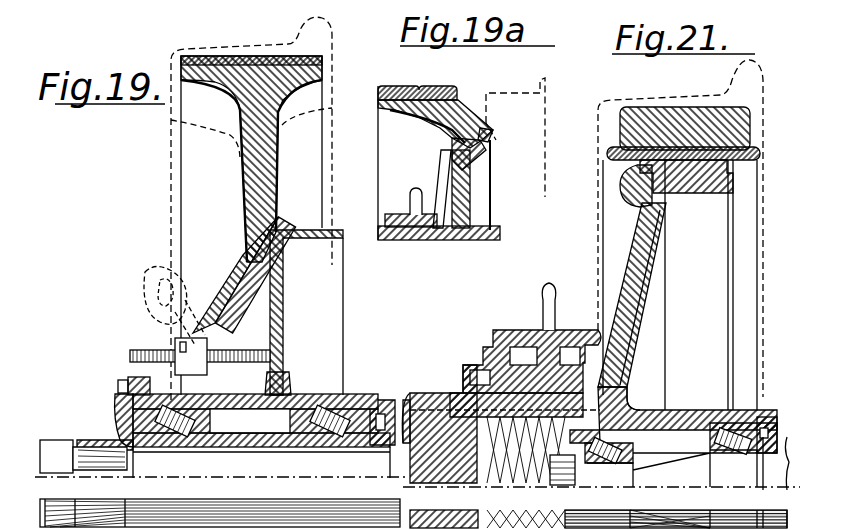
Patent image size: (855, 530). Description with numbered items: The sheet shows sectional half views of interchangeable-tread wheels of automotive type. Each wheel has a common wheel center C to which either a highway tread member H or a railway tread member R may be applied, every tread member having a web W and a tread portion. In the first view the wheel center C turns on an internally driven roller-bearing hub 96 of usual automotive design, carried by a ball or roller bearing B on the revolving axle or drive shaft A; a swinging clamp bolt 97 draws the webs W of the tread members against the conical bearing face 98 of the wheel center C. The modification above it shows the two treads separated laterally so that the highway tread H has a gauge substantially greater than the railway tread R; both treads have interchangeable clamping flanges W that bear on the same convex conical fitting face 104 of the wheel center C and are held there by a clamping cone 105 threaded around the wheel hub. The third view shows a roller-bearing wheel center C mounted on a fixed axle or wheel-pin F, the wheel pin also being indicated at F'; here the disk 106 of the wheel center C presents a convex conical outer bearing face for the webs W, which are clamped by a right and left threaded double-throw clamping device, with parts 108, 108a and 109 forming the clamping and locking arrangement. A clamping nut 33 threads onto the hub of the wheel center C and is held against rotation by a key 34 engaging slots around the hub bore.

In FIG. 19, the highway tread member H is at (300, 77).
In FIG. 19A, the highway tread member H is at (460, 82).
In FIG. 21, the highway tread member H is at (657, 118).
In FIG. 19, the railway tread member R is at (170, 118).
In FIG. 19A, the railway tread member R is at (508, 100).
In FIG. 21, the railway tread member R is at (700, 96).
In FIG. 19, the web W is at (233, 257).
In FIG. 19A, the web W is at (453, 126).
In FIG. 21, the web W is at (640, 222).
In FIG. 19, the wheel center C is at (277, 295).
In FIG. 19A, the wheel center C is at (470, 195).
In FIG. 21, the wheel center C is at (635, 346).
In FIG. 19, the conical bearing face 98 is at (277, 220).
In FIG. 19, the swinging clamp bolt 97 is at (143, 355).
In FIG. 19, the roller-bearing hub 96 is at (255, 396).
In FIG. 19, the ball or roller bearing B is at (340, 393).
In FIG. 19, the revolving axle or drive shaft A is at (237, 500).
In FIG. 19A, the clamping cone 105 is at (492, 135).
In FIG. 19A, the conical fitting face 104 is at (475, 160).
In FIG. 21, the disk 106 is at (648, 263).
In FIG. 21, the fillet portion 109 is at (640, 324).
In FIG. 21, the gear 108 is at (505, 331).
In FIG. 21, the lever 108a is at (560, 278).
In FIG. 21, the clamping nut 33 is at (450, 393).
In FIG. 21, the key 34 is at (407, 410).
In FIG. 21, the fixed axle or wheel-pin F is at (687, 434).
In FIG. 21, the frame part F' is at (598, 507).